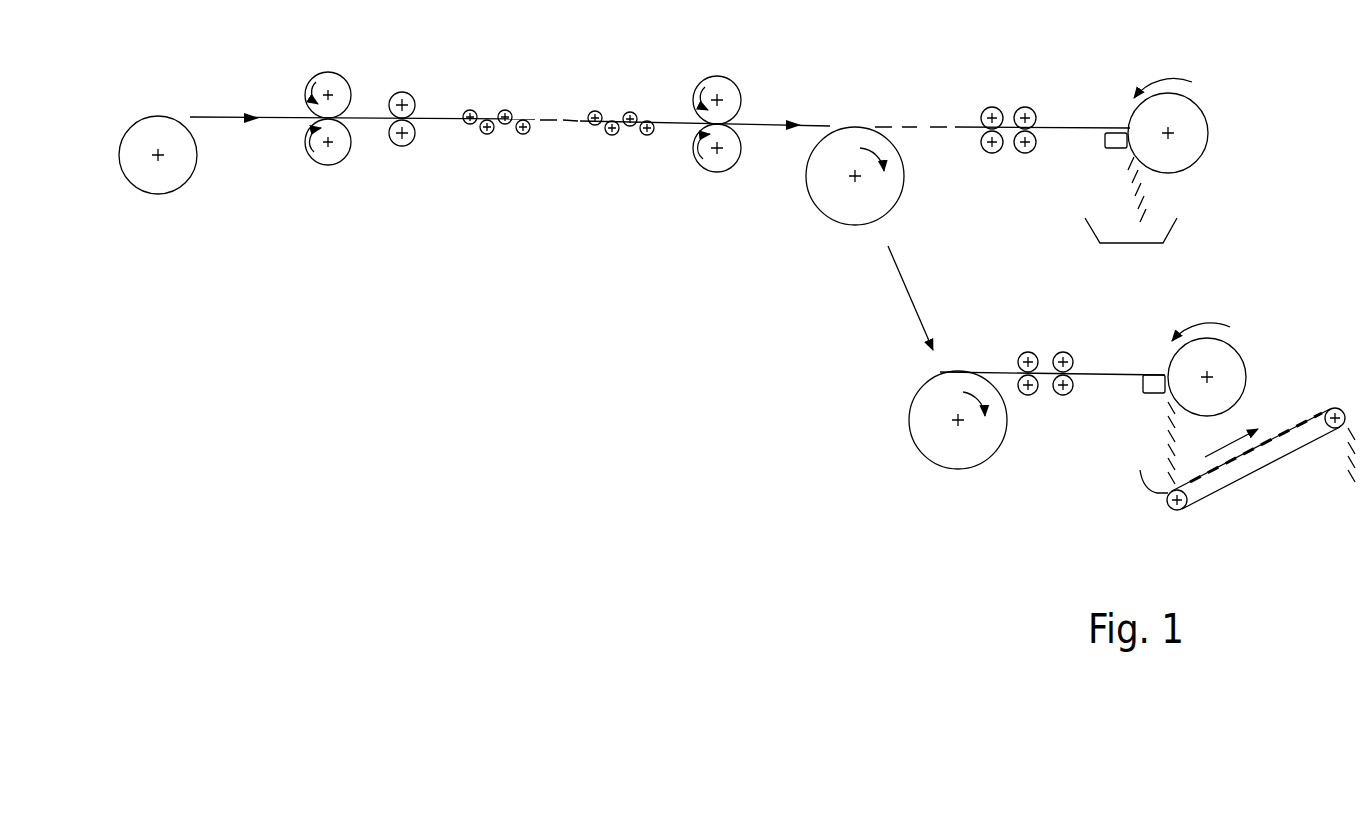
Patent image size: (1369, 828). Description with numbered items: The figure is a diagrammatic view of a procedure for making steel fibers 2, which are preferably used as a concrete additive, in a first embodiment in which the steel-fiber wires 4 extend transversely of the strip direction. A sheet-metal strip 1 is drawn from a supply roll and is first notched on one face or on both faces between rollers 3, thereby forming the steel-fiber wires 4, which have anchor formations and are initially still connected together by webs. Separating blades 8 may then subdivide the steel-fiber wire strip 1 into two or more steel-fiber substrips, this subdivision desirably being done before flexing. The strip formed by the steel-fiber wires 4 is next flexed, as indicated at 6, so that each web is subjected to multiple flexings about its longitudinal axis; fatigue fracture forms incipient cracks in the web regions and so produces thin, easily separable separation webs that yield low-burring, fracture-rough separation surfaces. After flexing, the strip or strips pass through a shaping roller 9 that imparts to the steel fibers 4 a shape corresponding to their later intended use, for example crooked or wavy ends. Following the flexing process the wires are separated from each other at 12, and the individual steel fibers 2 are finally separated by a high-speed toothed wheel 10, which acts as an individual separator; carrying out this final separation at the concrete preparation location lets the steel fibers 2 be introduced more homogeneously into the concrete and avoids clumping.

The sheet-metal strip 1 is at (200, 117).
The steel fibers 2 is at (1140, 191).
The rollers 3 is at (307, 141).
The steel-fiber wires 4 is at (375, 121).
The flexing location 6 is at (604, 107).
The separating blades 8 is at (409, 93).
The shaping roller 9 is at (725, 90).
The high-speed toothed wheel 10 is at (1195, 117).
The separation location 12 is at (1030, 108).